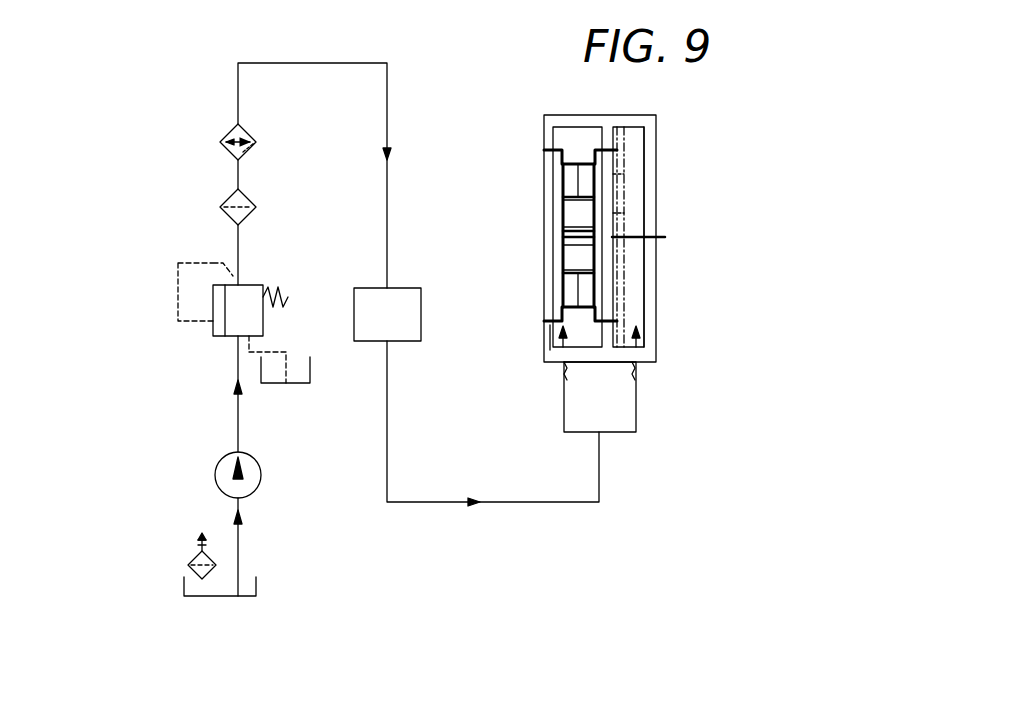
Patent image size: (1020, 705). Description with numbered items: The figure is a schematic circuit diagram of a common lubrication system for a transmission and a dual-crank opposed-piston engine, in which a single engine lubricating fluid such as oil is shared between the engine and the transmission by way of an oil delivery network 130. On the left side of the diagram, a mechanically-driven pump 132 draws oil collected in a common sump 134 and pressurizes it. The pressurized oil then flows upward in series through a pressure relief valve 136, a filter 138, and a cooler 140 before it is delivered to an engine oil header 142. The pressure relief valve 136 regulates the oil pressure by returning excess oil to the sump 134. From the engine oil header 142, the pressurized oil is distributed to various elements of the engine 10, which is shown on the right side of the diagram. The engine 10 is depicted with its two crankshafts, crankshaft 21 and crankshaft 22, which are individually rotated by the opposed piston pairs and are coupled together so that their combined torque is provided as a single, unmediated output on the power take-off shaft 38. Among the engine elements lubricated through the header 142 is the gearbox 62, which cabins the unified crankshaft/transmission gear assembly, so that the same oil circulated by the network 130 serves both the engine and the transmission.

The oil delivery network 130 is at (150, 115).
The cooler 140 is at (253, 136).
The filter 138 is at (249, 200).
The pressure relief valve 136 is at (255, 285).
The mechanically-driven pump 132 is at (262, 474).
The common sump 134 is at (220, 596).
The engine oil header 142 is at (412, 289).
The engine 10 is at (571, 115).
The crankshaft 21 is at (548, 150).
The power take-off shaft 38 is at (650, 237).
The crankshaft 22 is at (550, 325).
The gearbox 62 is at (676, 151).